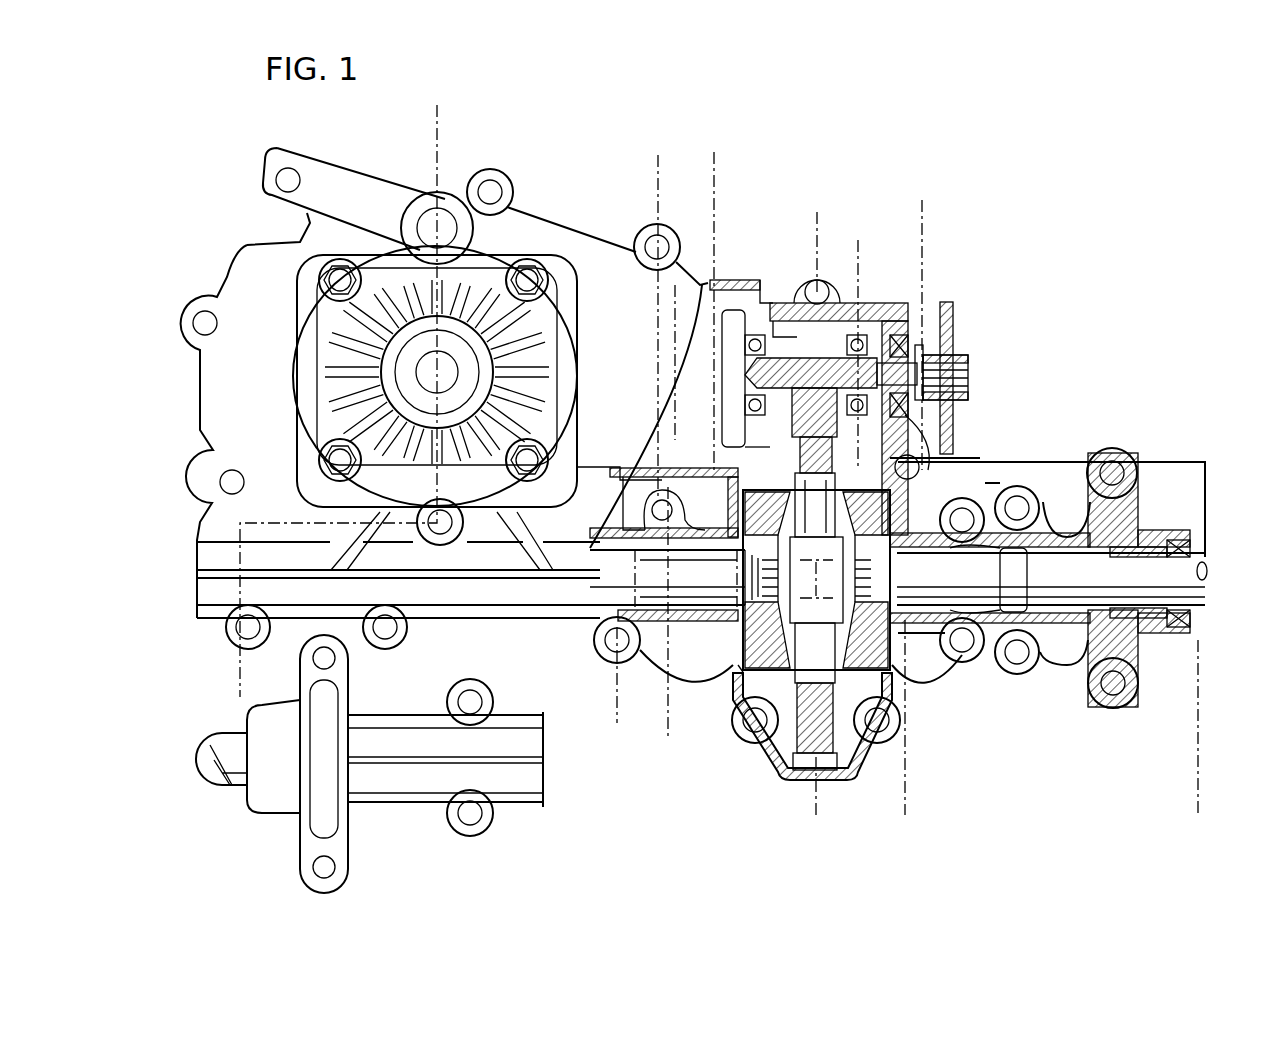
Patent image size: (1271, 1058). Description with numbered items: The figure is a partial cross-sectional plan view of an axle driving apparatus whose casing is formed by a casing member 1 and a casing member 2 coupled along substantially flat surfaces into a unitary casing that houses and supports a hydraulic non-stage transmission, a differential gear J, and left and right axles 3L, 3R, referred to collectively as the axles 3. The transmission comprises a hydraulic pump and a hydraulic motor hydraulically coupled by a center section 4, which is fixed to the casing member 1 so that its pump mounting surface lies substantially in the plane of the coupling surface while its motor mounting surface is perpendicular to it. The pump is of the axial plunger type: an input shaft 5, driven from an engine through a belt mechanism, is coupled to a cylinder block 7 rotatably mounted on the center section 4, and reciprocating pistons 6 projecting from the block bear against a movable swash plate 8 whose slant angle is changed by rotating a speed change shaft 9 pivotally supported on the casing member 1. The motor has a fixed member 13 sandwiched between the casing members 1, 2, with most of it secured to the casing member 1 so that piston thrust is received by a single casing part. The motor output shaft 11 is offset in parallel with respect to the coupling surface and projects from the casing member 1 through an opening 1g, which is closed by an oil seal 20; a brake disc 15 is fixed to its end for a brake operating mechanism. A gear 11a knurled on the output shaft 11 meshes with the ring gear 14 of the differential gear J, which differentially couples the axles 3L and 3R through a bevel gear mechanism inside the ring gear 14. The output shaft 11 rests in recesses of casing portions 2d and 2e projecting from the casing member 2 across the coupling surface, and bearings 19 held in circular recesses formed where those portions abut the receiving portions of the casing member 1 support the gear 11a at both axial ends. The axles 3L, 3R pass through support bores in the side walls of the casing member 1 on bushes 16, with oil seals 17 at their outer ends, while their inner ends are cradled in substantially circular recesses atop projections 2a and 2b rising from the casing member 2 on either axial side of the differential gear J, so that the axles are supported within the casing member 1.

The casing member 1 is at (582, 237).
The opening 1g is at (928, 440).
The casing member 2 is at (993, 378).
The projection 2a is at (687, 603).
The projection 2b is at (1000, 653).
The casing portion 2d is at (745, 300).
The casing portion 2e is at (840, 272).
The axle 3 is at (150, 572).
The left axle 3L is at (197, 728).
The right axle 3R is at (1052, 579).
The center section 4 is at (926, 210).
The input shaft 5 is at (526, 228).
The piston 6 is at (820, 220).
The cylinder block 7 is at (717, 162).
The movable swash plate 8 is at (667, 197).
The speed change shaft 9 is at (445, 113).
The output shaft 11 is at (968, 375).
The gear 11a is at (800, 355).
The fixed member 13 is at (741, 378).
The ring gear 14 is at (795, 428).
The brake disc 15 is at (953, 325).
The bush 16 is at (1157, 523).
The oil seal 17 is at (1197, 620).
The bearing 19 is at (752, 336).
The oil seal 20 is at (921, 345).
The differential gear J is at (733, 707).